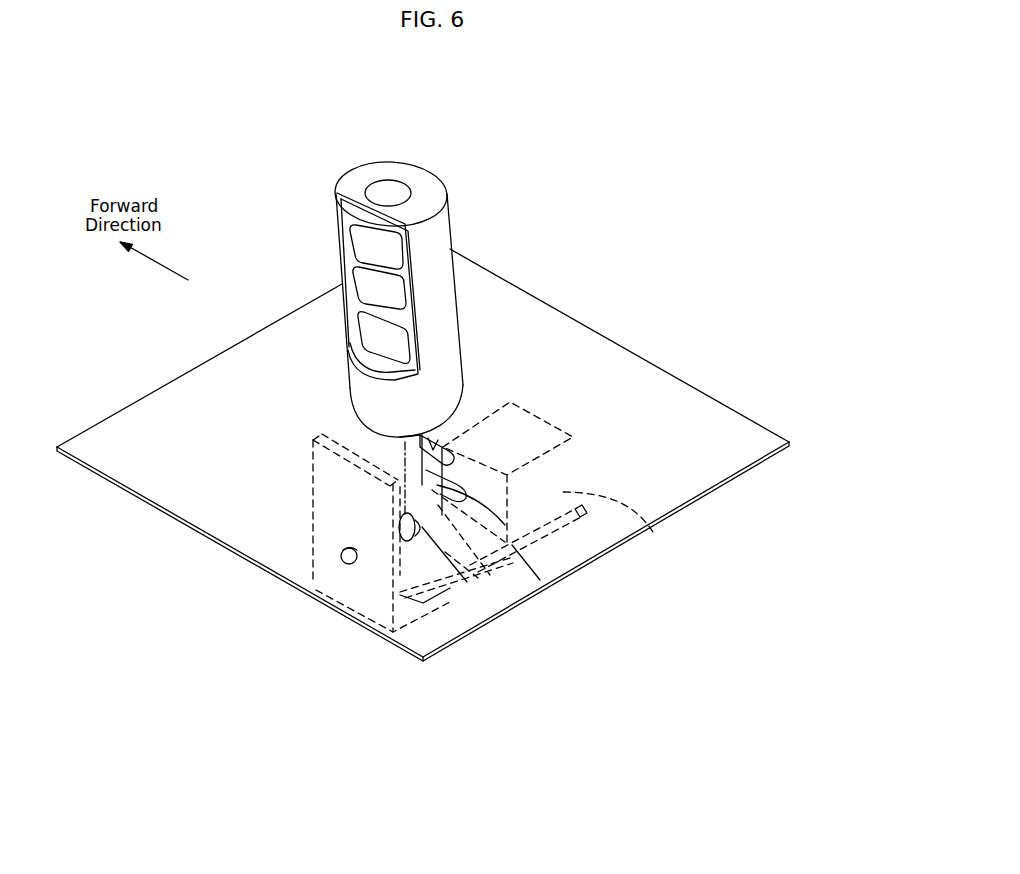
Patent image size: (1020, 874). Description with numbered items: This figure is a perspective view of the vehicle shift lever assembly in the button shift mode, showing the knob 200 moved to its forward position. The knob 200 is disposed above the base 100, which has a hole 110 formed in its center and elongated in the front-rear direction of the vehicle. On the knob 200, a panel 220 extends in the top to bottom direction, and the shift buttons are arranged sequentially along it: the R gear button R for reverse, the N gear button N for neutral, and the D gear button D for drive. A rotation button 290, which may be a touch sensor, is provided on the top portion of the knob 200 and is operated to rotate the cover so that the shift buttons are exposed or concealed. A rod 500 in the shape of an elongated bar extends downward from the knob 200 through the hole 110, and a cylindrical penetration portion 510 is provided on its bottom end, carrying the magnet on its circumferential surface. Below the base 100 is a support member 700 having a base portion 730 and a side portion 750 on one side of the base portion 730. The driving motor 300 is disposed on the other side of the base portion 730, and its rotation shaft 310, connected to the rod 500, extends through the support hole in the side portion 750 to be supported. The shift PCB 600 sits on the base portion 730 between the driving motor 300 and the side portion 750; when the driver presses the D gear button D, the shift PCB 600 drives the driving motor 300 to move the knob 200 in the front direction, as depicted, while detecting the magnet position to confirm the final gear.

The base 100 is at (587, 347).
The hole 110 is at (443, 447).
The knob 200 is at (374, 254).
The panel 220 is at (328, 280).
The rotation button 290 is at (386, 190).
The driving motor 300 is at (653, 532).
The rotation shaft 310 is at (342, 560).
The rod 500 is at (553, 590).
The cylindrical penetration portion 510 is at (427, 533).
The shift PCB 600 is at (497, 553).
The support member 700 is at (376, 590).
The base portion 730 is at (440, 590).
The side portion 750 is at (318, 530).
The R gear button R is at (357, 240).
The N gear button N is at (360, 279).
The D gear button D is at (368, 332).